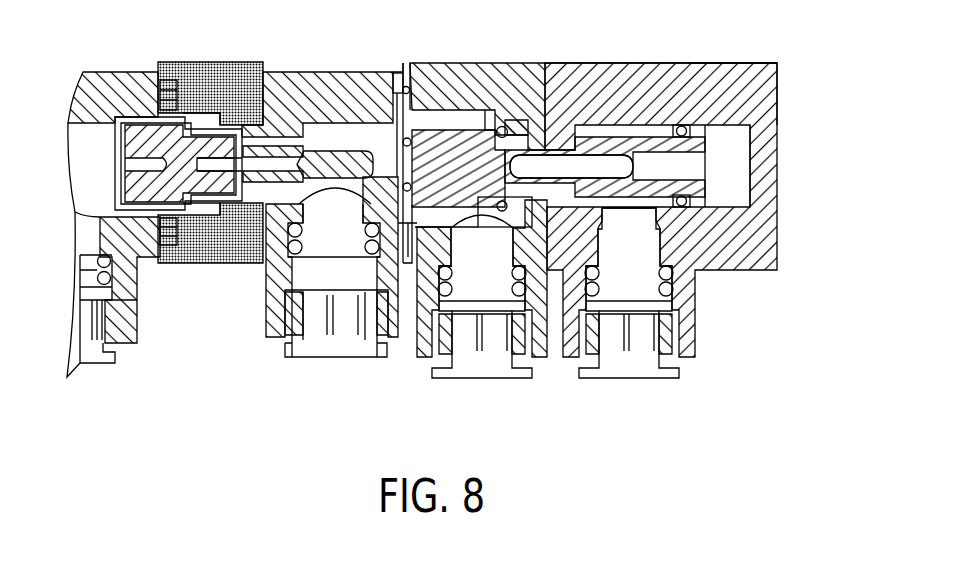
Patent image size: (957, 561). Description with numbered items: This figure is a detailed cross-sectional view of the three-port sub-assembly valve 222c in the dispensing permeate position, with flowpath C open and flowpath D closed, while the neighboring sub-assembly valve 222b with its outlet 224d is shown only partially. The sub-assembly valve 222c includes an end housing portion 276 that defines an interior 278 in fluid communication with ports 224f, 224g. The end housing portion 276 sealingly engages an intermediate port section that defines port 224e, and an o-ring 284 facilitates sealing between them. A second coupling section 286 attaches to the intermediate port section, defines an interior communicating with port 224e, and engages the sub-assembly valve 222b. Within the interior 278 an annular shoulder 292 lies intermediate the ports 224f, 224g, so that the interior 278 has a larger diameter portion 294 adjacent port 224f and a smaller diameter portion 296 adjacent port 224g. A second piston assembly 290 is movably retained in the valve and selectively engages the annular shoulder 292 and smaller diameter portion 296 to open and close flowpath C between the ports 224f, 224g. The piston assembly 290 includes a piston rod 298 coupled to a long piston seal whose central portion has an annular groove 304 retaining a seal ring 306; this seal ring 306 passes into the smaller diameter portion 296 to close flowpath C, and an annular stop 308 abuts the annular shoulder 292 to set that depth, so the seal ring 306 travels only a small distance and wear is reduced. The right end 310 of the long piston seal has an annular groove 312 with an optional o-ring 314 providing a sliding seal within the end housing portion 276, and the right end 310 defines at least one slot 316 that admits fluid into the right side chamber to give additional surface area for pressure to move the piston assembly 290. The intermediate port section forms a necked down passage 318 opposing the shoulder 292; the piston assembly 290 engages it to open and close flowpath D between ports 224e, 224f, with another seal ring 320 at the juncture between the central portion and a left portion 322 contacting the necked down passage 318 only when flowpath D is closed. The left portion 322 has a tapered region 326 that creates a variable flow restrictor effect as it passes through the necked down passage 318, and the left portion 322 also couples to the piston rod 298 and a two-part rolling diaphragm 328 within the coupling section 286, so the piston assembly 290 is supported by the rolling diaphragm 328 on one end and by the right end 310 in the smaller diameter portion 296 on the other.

The sub-assembly valve 222b is at (130, 88).
The sub-assembly valve 222c is at (767, 82).
The outlet 224d is at (108, 365).
The port 224e is at (345, 347).
The port 224f is at (493, 364).
The port 224g is at (638, 364).
The end housing portion 276 is at (763, 255).
The interior 278 is at (737, 167).
The o-ring 284 is at (409, 240).
The second coupling section 286 is at (187, 63).
The second piston assembly 290 is at (464, 125).
The annular shoulder 292 is at (538, 135).
The larger diameter portion 294 is at (405, 135).
The smaller diameter portion 296 is at (737, 147).
The piston rod 298 is at (125, 180).
The annular groove 304 is at (518, 128).
The seal ring 306 is at (500, 125).
The annular stop 308 is at (502, 212).
The right end 310 is at (681, 126).
The annular groove 312 is at (704, 207).
The o-ring 314 is at (700, 100).
The slot 316 is at (588, 147).
The necked down passage 318 is at (392, 122).
The seal ring 320 is at (394, 88).
The left portion 322 is at (302, 145).
The tapered region 326 is at (301, 244).
The two-part rolling diaphragm 328 is at (118, 150).